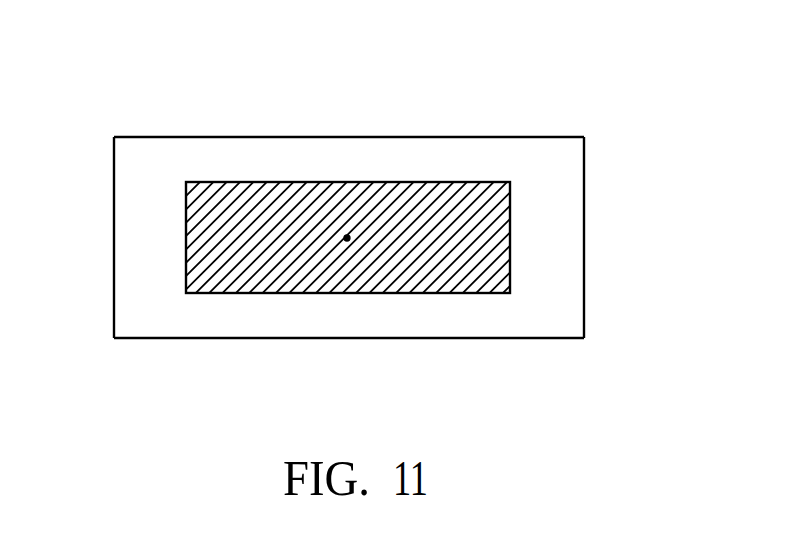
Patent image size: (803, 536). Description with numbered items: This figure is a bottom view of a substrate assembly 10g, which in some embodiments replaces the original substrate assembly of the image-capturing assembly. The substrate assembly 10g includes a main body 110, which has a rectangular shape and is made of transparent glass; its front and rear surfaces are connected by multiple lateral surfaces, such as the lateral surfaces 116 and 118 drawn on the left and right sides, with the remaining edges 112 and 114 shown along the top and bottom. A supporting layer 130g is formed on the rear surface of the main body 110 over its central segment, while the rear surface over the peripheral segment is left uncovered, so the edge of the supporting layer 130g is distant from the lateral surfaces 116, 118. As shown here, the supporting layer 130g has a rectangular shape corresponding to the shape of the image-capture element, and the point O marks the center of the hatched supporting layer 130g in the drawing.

The substrate assembly 10g is at (612, 108).
The main body 110 is at (542, 157).
The top edge / first side surface 112 is at (269, 137).
The bottom edge / second side surface 114 is at (273, 338).
The lateral surface 116 is at (114, 232).
The lateral surface 118 is at (584, 232).
The supporting layer 130g is at (378, 208).
The center point O is at (347, 241).